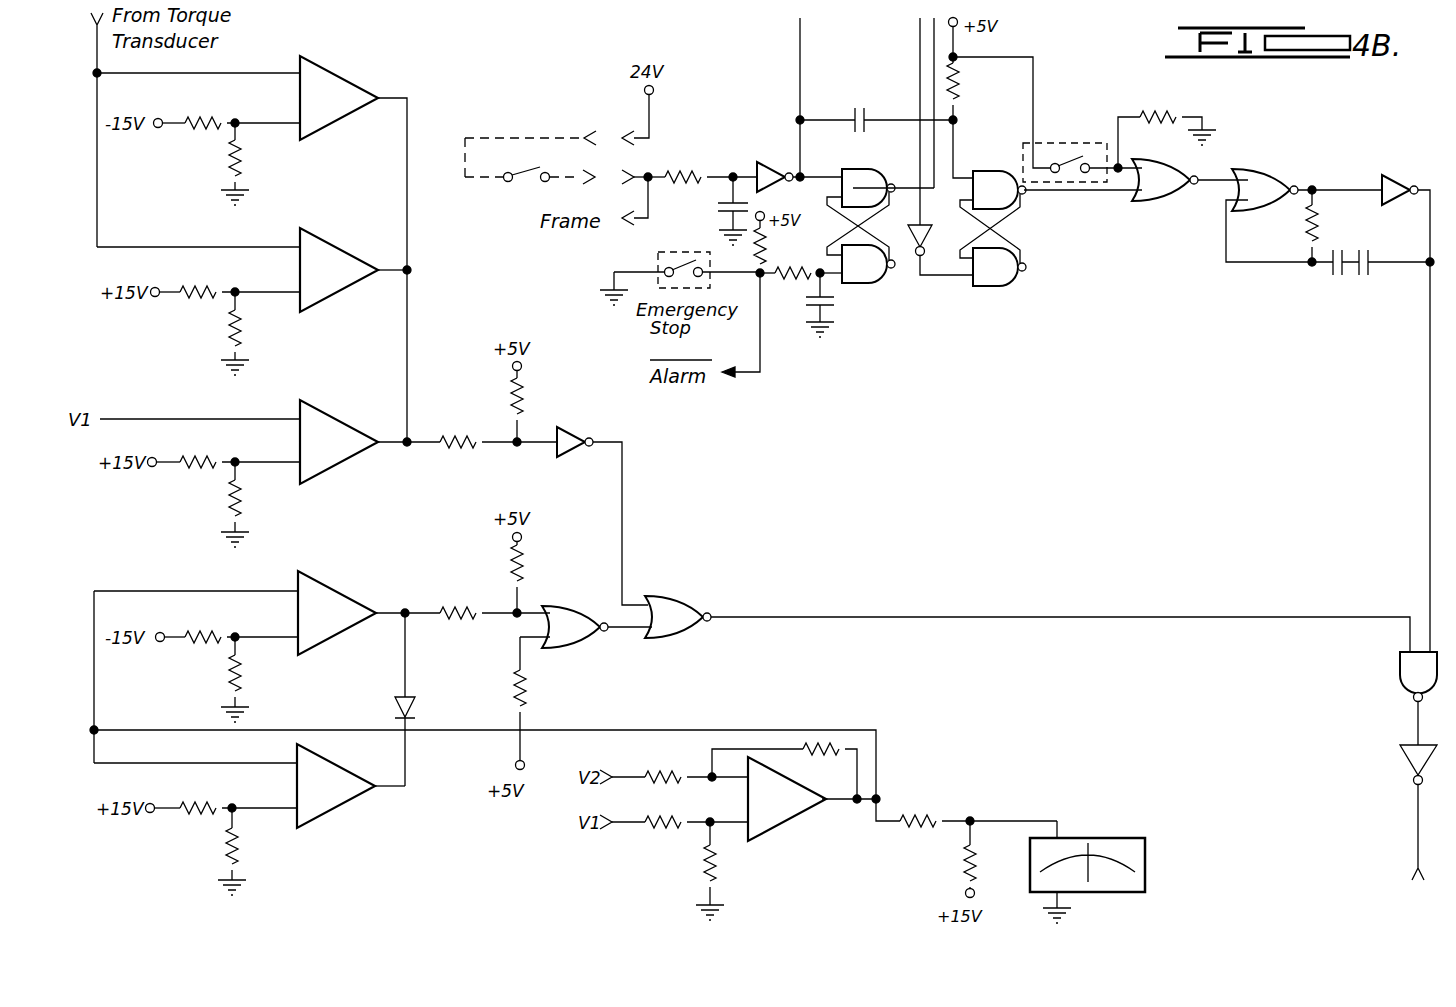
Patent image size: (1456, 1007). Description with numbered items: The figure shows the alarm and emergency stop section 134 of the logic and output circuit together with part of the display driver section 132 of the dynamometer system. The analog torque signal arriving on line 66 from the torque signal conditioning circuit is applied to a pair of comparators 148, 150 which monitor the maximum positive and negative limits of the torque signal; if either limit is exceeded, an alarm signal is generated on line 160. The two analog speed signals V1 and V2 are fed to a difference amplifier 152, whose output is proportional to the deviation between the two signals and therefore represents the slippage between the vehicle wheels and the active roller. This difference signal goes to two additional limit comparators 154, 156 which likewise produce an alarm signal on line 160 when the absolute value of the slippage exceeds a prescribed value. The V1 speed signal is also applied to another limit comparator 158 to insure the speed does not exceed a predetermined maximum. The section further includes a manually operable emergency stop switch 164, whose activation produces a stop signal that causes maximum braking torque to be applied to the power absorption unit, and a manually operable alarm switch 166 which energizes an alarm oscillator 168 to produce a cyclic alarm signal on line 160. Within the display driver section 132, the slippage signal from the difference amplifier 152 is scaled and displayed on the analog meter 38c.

The line 66 is at (100, 67).
The comparator 148 is at (352, 90).
The comparator 150 is at (335, 245).
The limit comparator 158 is at (335, 418).
The limit comparator 154 is at (332, 590).
The limit comparator 156 is at (332, 812).
The difference amplifier 152 is at (812, 818).
The display driver section 132 is at (918, 883).
The alarm and emergency stop section 134 is at (1057, 430).
The meter 38c is at (1090, 836).
The line 160 is at (1418, 797).
The emergency stop switch 164 is at (668, 262).
The alarm switch 166 is at (1072, 172).
The alarm oscillator 168 is at (1351, 174).